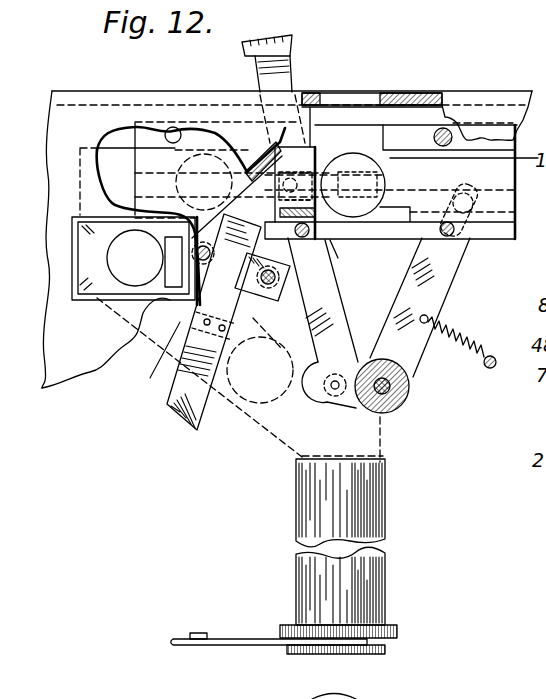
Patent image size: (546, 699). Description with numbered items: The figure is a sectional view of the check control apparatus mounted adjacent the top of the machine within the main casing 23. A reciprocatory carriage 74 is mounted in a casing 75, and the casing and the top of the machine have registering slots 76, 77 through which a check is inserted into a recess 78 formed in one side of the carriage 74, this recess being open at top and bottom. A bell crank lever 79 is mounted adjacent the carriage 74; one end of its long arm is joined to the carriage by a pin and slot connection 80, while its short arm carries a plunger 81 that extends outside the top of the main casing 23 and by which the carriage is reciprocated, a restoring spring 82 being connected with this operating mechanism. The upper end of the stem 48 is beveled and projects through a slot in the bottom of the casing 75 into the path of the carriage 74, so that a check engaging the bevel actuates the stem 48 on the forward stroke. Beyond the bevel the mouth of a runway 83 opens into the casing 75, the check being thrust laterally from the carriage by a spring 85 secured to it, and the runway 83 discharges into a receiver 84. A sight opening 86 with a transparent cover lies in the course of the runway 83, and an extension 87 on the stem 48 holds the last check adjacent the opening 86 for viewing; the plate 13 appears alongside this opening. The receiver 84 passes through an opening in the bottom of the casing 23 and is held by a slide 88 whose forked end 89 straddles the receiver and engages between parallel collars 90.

The casing 23 is at (46, 170).
The plate 13 is at (72, 233).
The sight opening 86 is at (90, 287).
The plunger 81 is at (278, 78).
The registering slot 76 is at (362, 96).
The registering slot 77 is at (364, 128).
The casing 75 is at (400, 136).
The reciprocatory carriage 74 is at (437, 168).
The spring 85 is at (352, 191).
The pin and slot connection 80 is at (470, 182).
The recess 78 is at (330, 236).
The bell crank lever 79 is at (435, 280).
The restoring spring 82 is at (463, 351).
The stem 48 is at (187, 390).
The runway 83 is at (160, 350).
The extension 87 is at (158, 372).
The receiver 84 is at (363, 497).
The parallel collars 90 is at (396, 627).
The slide 88 is at (242, 639).
The forked end 89 is at (358, 652).